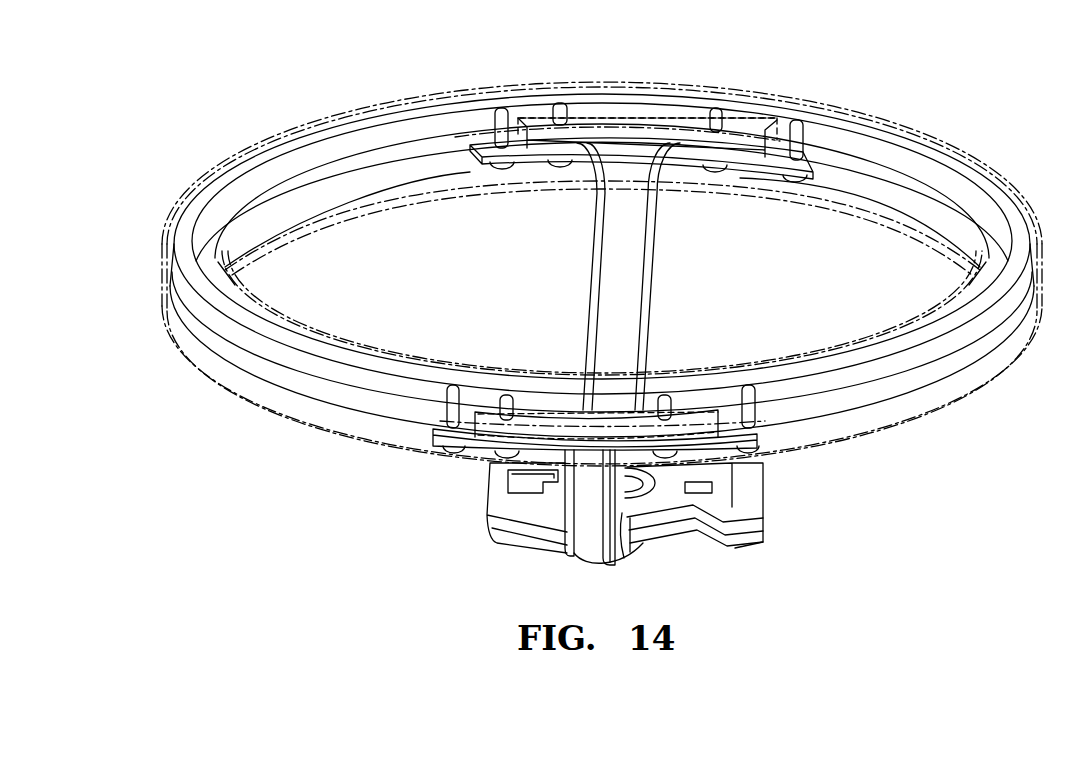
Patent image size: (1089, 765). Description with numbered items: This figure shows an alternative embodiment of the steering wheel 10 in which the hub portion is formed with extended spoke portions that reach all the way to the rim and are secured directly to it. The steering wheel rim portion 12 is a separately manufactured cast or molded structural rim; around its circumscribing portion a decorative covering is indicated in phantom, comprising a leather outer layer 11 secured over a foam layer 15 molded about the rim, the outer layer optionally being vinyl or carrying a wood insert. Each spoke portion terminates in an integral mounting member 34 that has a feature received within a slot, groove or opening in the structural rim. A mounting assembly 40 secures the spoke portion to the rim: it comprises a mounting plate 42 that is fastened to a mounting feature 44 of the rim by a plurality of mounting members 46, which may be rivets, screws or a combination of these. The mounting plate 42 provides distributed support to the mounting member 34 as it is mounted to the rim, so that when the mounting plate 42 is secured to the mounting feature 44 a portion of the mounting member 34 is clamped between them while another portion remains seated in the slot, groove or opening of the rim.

The hoop assembly 10 is at (492, 80).
The outer ring 11 is at (780, 97).
The inner ring 12 is at (370, 127).
The cover (phantom) 15 is at (905, 133).
The strut 34 is at (632, 165).
The mounting bracket 40 is at (472, 160).
The mount 42 is at (752, 165).
The bracket plate (hidden) 44 is at (582, 118).
The fastener 46 is at (713, 172).